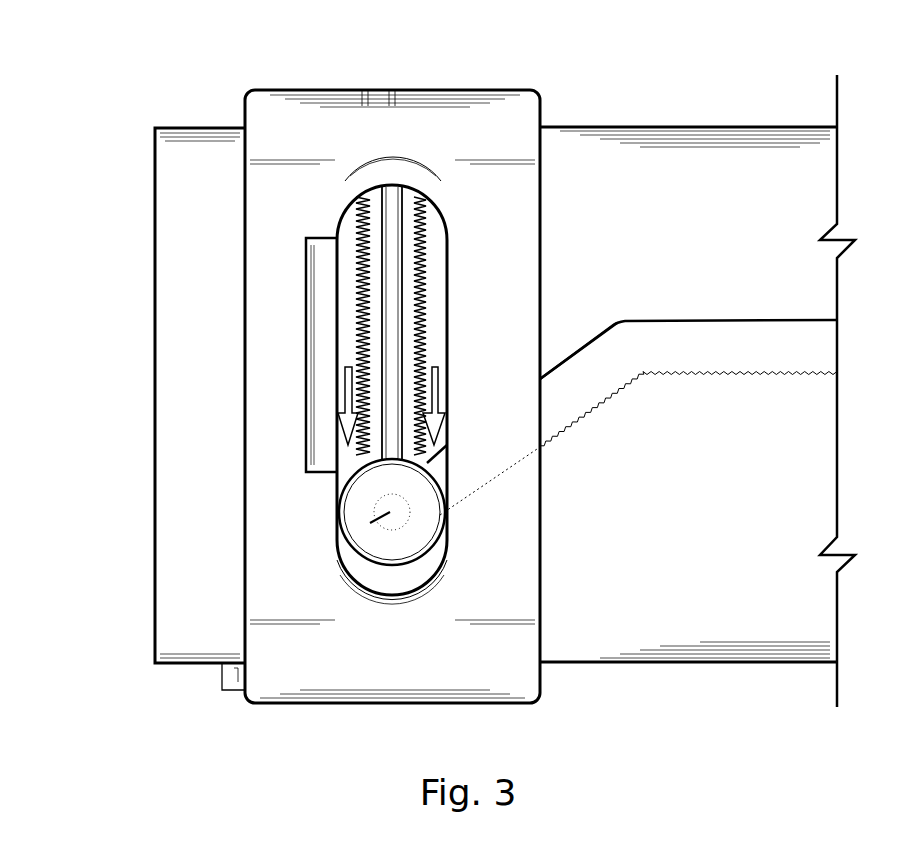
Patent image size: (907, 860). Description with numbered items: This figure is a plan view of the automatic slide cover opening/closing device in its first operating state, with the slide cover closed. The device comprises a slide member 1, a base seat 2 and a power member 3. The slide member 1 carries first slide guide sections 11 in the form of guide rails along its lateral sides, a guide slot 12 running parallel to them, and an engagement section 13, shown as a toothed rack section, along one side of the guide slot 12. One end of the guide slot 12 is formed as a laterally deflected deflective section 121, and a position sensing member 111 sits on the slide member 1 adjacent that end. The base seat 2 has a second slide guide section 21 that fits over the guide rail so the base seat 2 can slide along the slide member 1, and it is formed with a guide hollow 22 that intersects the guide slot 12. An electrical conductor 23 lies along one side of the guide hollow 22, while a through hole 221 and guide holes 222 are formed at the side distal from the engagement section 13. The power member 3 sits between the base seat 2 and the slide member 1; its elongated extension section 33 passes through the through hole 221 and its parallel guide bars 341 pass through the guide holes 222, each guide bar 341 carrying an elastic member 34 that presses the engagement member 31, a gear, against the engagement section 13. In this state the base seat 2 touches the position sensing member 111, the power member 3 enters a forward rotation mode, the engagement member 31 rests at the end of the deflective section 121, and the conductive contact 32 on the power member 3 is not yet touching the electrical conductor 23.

The slide member 1 is at (680, 163).
The first slide guide section 11 is at (155, 218).
The position sensing member 111 is at (235, 690).
The guide slot 12 is at (740, 345).
The deflective section 121 is at (565, 387).
The engagement section 13 is at (803, 373).
The base seat 2 is at (280, 88).
The second slide guide section 21 is at (505, 137).
The guide hollow 22 is at (347, 457).
The through hole 221 is at (392, 90).
The guide hole 222 is at (365, 90).
The electrical conductor 23 is at (313, 422).
The power member 3 is at (271, 456).
The engagement member 31 is at (387, 527).
The conductive contact 32 is at (345, 520).
The extension section 33 is at (393, 205).
The elastic member 34 is at (262, 326).
The guide bar 341 is at (360, 323).